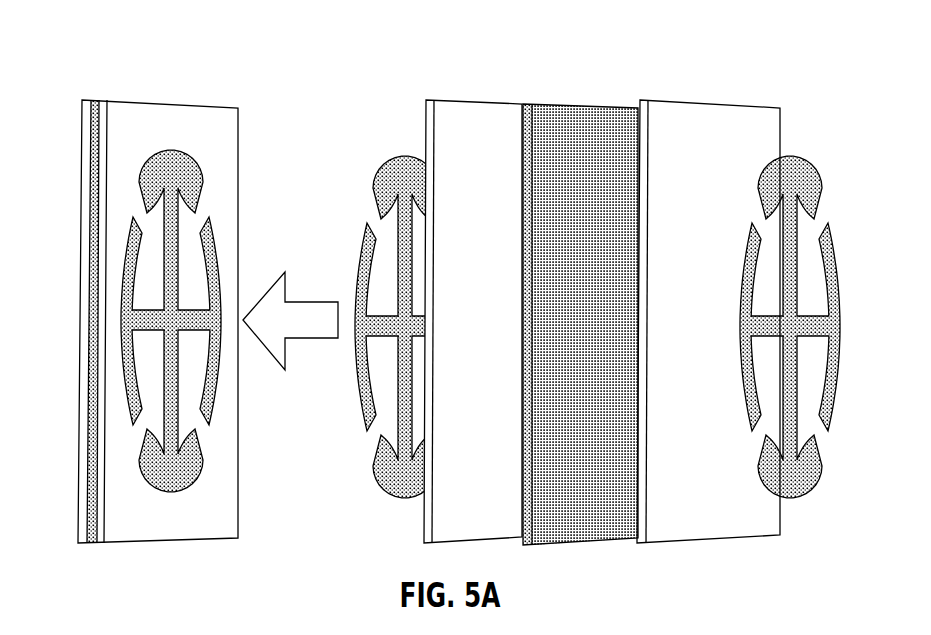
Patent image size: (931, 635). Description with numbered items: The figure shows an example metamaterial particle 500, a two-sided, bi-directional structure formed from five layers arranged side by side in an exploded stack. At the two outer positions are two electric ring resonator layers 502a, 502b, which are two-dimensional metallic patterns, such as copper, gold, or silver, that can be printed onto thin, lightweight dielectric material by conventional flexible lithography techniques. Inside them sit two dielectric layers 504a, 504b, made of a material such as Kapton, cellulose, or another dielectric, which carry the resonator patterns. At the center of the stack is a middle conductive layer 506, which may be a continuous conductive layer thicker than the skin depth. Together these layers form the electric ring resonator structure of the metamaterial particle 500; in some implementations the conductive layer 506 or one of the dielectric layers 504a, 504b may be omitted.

The metamaterial particle 500 is at (117, 52).
The electric ring resonator layer 502a is at (398, 157).
The electric ring resonator layer 502b is at (800, 158).
The dielectric layer 504a is at (470, 103).
The dielectric layer 504b is at (723, 103).
The conductive layer 506 is at (577, 103).